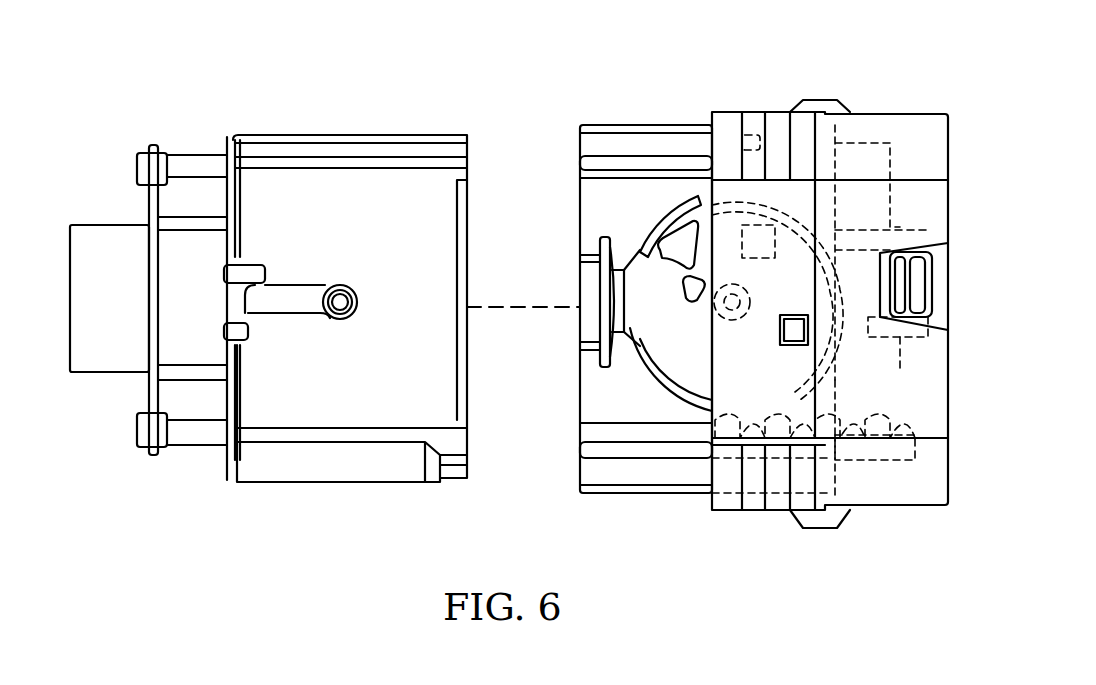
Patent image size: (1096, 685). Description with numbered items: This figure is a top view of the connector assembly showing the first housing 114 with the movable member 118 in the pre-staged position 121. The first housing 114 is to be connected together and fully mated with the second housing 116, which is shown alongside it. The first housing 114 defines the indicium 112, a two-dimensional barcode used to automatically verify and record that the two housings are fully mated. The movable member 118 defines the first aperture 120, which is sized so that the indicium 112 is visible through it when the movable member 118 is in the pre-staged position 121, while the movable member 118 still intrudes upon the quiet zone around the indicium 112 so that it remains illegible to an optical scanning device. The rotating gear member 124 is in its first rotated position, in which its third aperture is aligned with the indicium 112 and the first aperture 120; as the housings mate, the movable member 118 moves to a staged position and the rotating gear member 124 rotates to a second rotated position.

The indicium 112 is at (782, 345).
The first housing 114 is at (607, 473).
The second housing 116 is at (100, 240).
The movable member 118 is at (925, 408).
The first aperture 120 is at (795, 345).
The pre-staged position 121 is at (905, 110).
The rotating gear member 124 is at (635, 287).